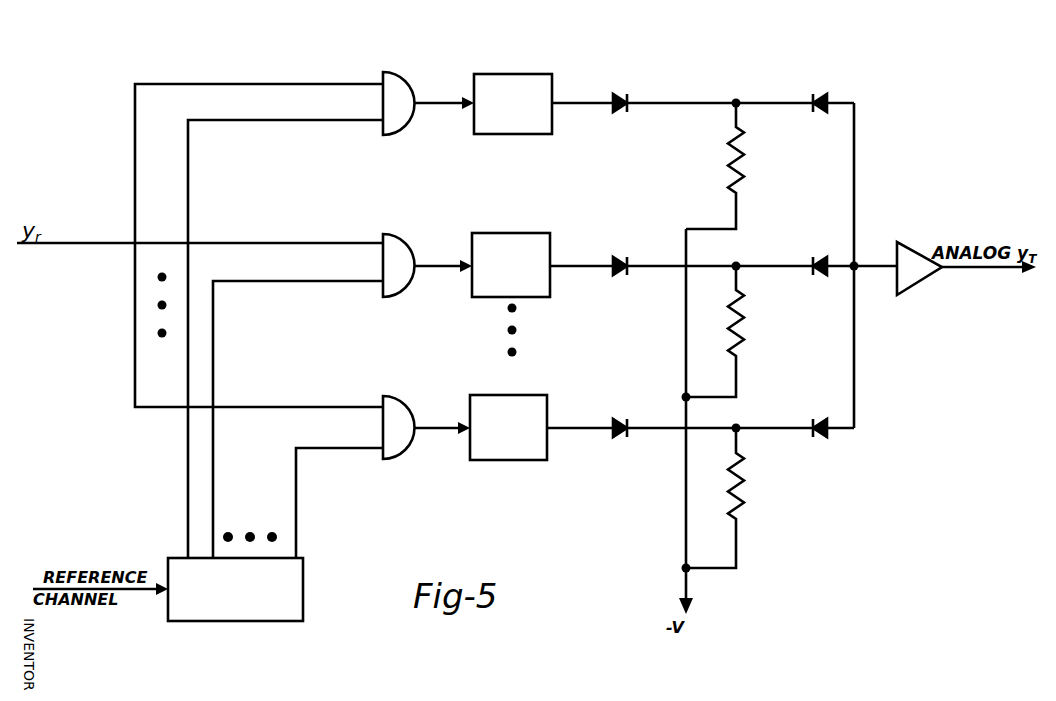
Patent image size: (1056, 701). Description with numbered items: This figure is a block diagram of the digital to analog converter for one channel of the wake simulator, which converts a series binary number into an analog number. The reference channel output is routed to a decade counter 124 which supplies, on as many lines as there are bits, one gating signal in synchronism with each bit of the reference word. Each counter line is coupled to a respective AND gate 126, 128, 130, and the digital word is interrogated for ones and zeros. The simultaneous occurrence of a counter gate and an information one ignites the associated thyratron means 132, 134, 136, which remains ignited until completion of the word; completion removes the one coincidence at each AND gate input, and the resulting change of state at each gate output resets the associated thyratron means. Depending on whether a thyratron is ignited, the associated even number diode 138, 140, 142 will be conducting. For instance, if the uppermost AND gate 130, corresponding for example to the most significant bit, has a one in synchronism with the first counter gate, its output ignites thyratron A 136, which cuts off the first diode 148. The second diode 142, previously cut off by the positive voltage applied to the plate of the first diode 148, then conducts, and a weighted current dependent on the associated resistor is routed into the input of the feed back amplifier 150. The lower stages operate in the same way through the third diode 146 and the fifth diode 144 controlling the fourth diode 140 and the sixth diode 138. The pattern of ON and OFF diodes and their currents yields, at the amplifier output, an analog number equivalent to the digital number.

The decade counter 124 is at (249, 622).
The AND gate 126 is at (397, 459).
The AND gate 128 is at (395, 296).
The AND gate 130 is at (392, 72).
The thyratron means C 132 is at (515, 461).
The thyratron means B 134 is at (538, 298).
The thyratron means A 136 is at (506, 74).
The even number diode D6 138 is at (817, 440).
The even number diode D4 140 is at (823, 272).
The even number diode D2 142 is at (826, 100).
The diode D5 144 is at (622, 440).
The diode D3 146 is at (624, 277).
The diode D1 148 is at (619, 93).
The feed back amplifier 150 is at (921, 282).